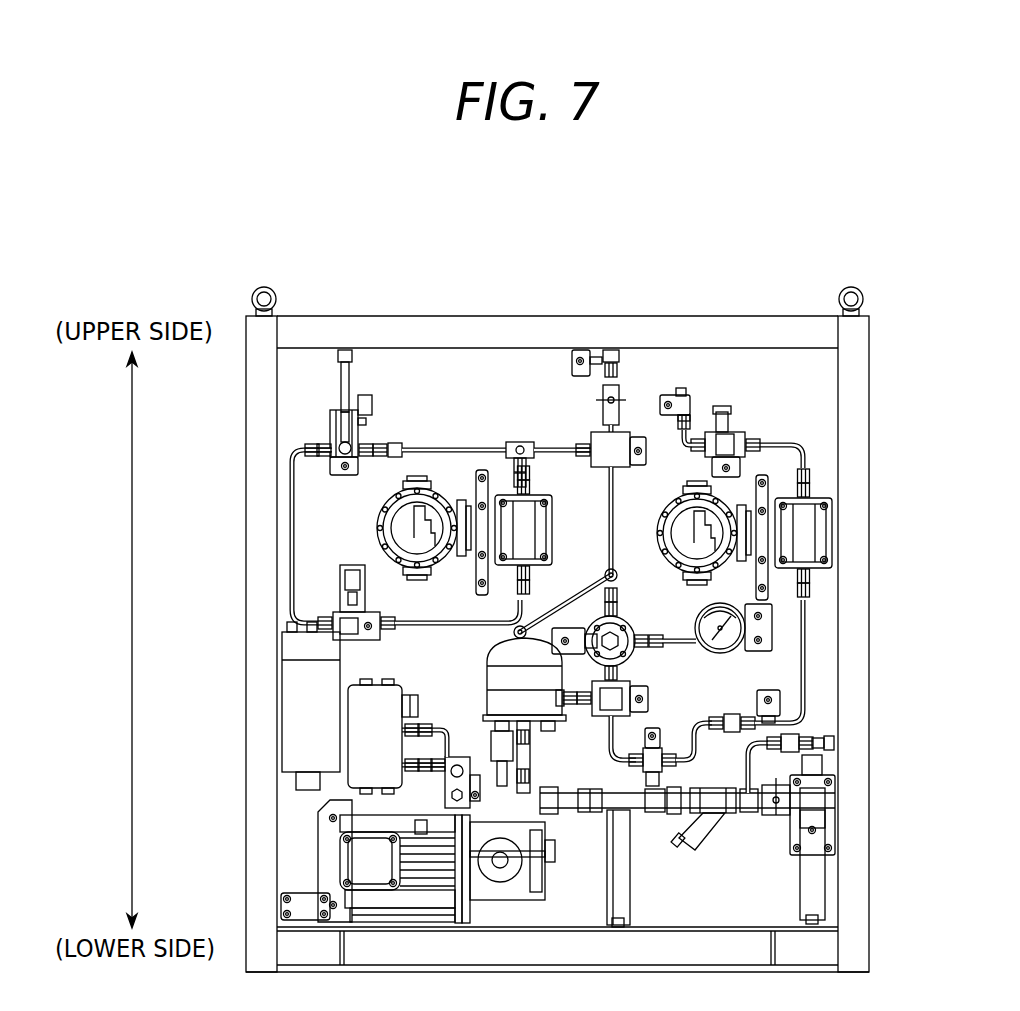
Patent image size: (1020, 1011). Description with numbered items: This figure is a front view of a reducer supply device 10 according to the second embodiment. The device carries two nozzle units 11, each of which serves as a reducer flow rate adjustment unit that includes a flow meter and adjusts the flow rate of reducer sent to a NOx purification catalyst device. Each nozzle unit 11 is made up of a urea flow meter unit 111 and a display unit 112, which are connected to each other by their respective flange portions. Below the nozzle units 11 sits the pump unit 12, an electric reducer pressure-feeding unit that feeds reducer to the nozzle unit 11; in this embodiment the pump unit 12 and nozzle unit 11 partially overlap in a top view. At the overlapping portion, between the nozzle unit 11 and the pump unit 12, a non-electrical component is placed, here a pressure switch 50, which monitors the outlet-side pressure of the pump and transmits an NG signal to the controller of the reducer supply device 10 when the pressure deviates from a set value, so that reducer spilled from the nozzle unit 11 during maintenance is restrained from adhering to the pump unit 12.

The reducer supply device 10 is at (278, 196).
The nozzle unit 11 is at (565, 264).
The urea flow meter unit 111 is at (520, 532).
The display unit 112 is at (412, 530).
The pressure switch 50 is at (370, 722).
The pump unit 12 is at (362, 862).